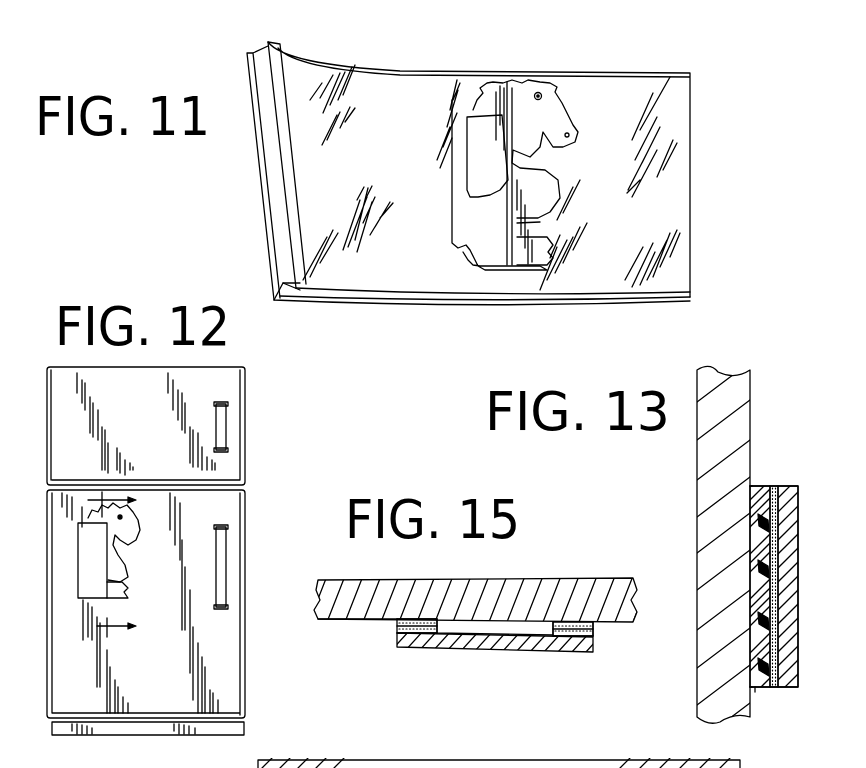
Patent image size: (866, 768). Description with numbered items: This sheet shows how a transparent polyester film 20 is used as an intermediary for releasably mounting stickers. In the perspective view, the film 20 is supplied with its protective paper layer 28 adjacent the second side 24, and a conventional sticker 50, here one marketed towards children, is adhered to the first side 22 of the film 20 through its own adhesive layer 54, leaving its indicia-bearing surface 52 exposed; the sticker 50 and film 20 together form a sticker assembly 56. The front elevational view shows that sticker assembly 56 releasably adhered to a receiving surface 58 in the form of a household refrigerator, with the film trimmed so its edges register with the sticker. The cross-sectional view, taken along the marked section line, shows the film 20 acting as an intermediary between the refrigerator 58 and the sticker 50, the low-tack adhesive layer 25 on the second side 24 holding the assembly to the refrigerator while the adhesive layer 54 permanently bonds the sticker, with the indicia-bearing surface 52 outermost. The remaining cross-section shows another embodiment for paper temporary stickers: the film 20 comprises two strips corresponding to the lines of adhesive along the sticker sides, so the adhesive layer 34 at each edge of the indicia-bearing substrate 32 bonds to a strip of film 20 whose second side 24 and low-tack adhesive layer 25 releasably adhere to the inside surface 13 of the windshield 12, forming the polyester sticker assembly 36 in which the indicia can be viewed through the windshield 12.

In FIG. 15, the windshield 12 is at (633, 602).
In FIG. 12, the inside surface 13 is at (126, 573).
In FIG. 15, the inside surface 13 is at (323, 618).
In FIG. 11, the polyester film 20 is at (677, 277).
In FIG. 13, the polyester film 20 is at (757, 497).
In FIG. 15, the polyester film 20 is at (397, 624).
In FIG. 11, the first side 22 is at (367, 285).
In FIG. 11, the second side 24 is at (292, 293).
In FIG. 15, the second side 24 is at (403, 610).
In FIG. 13, the low-tack adhesive layer 25 is at (700, 586).
In FIG. 15, the low-tack adhesive layer 25 is at (412, 627).
In FIG. 11, the protective paper layer 28 is at (283, 265).
In FIG. 15, the indicia-bearing substrate 32 is at (578, 648).
In FIG. 15, the adhesive layer 34 is at (397, 632).
In FIG. 15, the polyester sticker assembly 36 is at (390, 646).
In FIG. 11, the sticker 50 is at (530, 73).
In FIG. 13, the sticker 50 is at (777, 484).
In FIG. 11, the indicia-bearing surface 52 is at (497, 100).
In FIG. 13, the indicia-bearing surface 52 is at (793, 486).
In FIG. 11, the adhesive layer 54 is at (460, 247).
In FIG. 13, the adhesive layer 54 is at (768, 486).
In FIG. 12, the sticker assembly 56 is at (82, 542).
In FIG. 13, the sticker assembly 56 is at (770, 693).
In FIG. 12, the receiving surface 58 is at (57, 507).
In FIG. 13, the receiving surface 58 is at (742, 390).